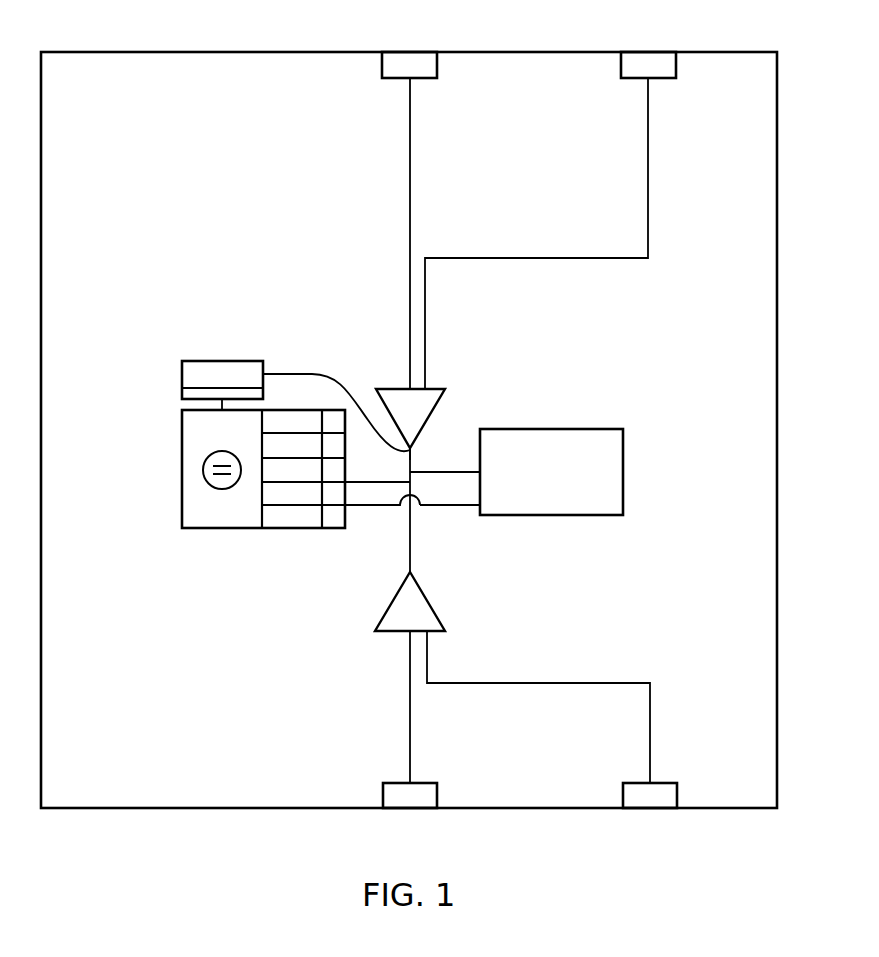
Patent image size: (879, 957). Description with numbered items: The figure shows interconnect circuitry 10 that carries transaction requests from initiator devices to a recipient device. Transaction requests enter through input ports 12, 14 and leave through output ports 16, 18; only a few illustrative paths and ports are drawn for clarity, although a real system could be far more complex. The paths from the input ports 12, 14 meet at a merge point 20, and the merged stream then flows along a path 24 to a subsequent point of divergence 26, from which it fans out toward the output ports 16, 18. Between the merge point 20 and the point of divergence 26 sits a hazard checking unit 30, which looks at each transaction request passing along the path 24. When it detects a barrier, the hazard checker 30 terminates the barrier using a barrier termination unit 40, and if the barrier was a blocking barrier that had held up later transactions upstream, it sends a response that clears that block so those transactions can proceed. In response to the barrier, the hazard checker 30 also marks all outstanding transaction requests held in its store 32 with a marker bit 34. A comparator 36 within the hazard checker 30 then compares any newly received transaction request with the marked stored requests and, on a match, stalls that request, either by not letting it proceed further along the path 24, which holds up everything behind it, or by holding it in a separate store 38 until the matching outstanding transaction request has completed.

The interconnect circuitry 10 is at (735, 51).
The input port 12 is at (407, 51).
The input port 14 is at (646, 51).
The output port 16 is at (410, 809).
The output port 18 is at (650, 809).
The merge point 20 is at (441, 387).
The path 24 is at (416, 455).
The point of divergence 26 is at (431, 601).
The hazard checking unit 30 is at (181, 449).
The store 32 is at (295, 515).
The marker bit 34 is at (333, 410).
The comparator 36 is at (222, 512).
The separate store 38 is at (222, 360).
The barrier termination unit 40 is at (624, 470).